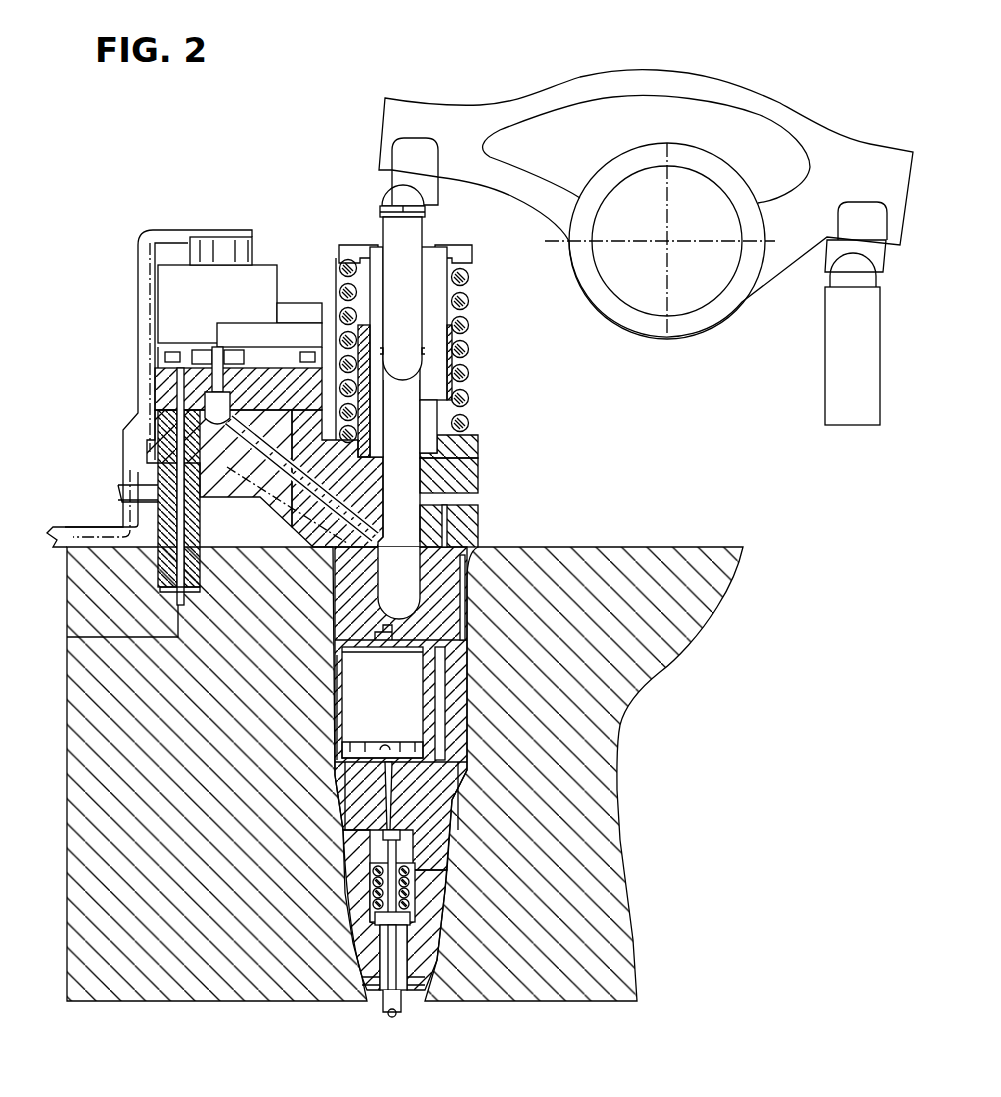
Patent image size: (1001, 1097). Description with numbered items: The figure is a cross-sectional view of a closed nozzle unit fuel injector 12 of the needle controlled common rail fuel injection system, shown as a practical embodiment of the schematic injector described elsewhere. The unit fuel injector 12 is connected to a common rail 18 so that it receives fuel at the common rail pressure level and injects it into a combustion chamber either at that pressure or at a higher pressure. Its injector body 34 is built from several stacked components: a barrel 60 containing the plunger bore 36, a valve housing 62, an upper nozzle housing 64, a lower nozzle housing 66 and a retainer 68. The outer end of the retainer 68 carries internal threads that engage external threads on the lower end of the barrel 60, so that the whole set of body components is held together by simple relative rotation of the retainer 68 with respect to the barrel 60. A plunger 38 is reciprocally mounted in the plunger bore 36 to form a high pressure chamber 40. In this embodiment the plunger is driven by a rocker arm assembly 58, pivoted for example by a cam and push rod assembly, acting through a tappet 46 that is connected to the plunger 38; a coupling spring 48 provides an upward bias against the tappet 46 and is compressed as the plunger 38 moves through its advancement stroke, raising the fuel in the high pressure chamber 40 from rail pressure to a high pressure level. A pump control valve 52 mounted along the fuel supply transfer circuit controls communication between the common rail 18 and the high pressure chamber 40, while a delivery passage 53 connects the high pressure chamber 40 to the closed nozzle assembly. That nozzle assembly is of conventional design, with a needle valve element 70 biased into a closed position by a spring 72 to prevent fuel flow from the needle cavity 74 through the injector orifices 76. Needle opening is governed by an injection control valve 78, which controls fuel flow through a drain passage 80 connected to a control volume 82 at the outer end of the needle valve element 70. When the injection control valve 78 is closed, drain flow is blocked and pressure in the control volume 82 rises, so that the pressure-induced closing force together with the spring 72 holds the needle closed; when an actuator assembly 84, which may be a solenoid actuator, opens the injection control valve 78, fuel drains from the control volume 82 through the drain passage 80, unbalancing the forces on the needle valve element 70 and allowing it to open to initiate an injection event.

The unit fuel injector 12 is at (470, 412).
The common rail 18 is at (18, 627).
The injector body 34 is at (540, 547).
The plunger bore 36 is at (478, 462).
The plunger 38 is at (478, 492).
The high pressure chamber 40 is at (478, 526).
The tappet 46 is at (356, 243).
The coupling spring 48 is at (470, 321).
The pump control valve 52 is at (268, 265).
The delivery passage 53 is at (445, 628).
The rocker arm assembly 58 is at (668, 64).
The barrel 60 is at (448, 437).
The valve housing 62 is at (455, 718).
The upper nozzle housing 64 is at (415, 866).
The lower nozzle housing 66 is at (452, 985).
The retainer 68 is at (348, 875).
The needle valve element 70 is at (415, 990).
The spring 72 is at (372, 900).
The needle cavity 74 is at (388, 935).
The injector orifices 76 is at (388, 1022).
The injection control valve 78 is at (338, 700).
The drain passage 80 is at (337, 796).
The control volume 82 is at (355, 845).
The actuator assembly 84 is at (362, 722).